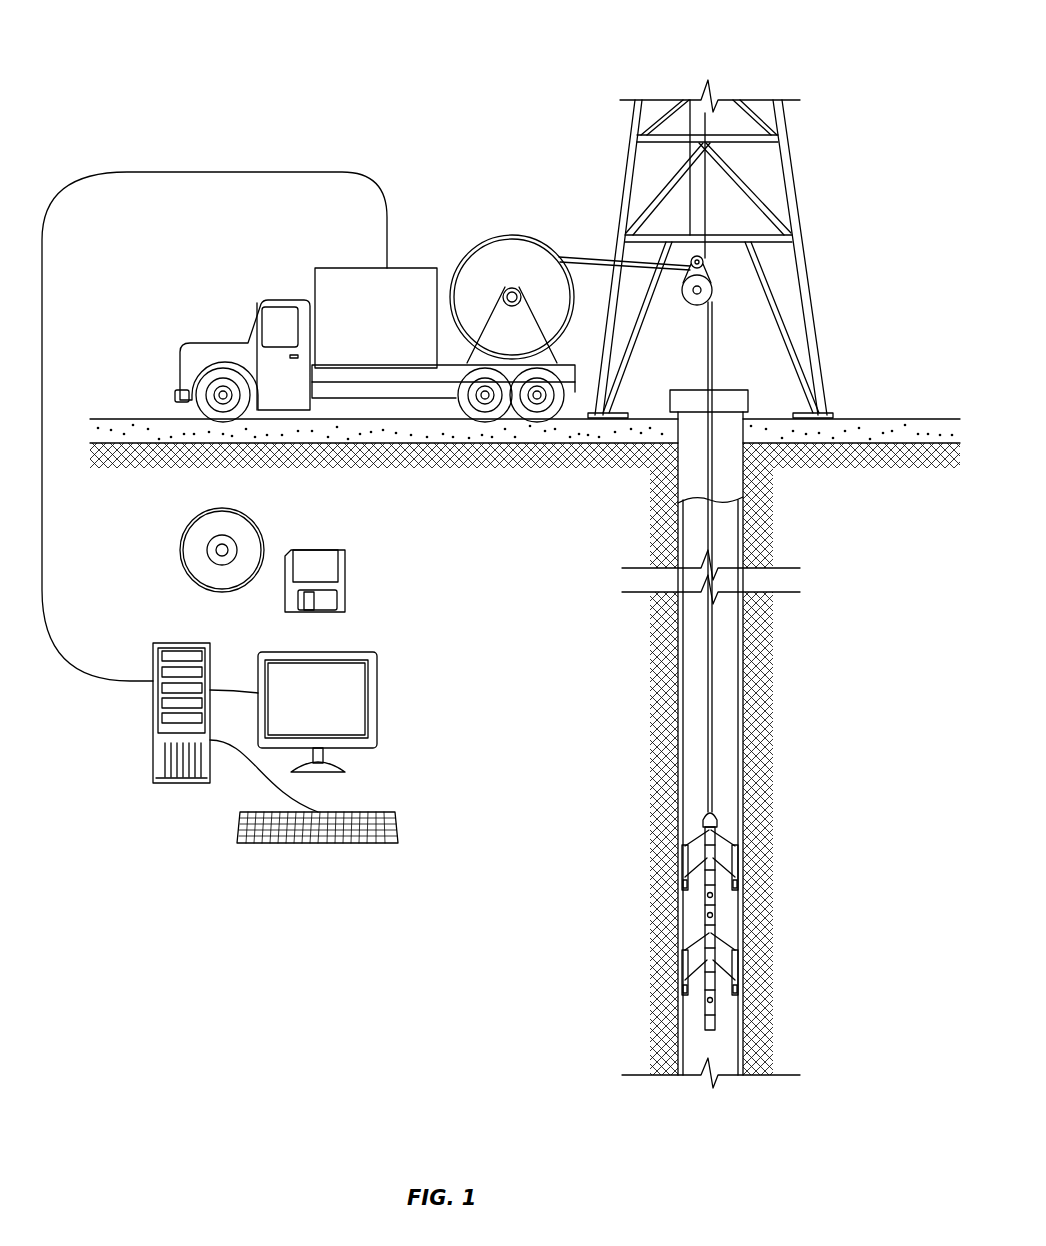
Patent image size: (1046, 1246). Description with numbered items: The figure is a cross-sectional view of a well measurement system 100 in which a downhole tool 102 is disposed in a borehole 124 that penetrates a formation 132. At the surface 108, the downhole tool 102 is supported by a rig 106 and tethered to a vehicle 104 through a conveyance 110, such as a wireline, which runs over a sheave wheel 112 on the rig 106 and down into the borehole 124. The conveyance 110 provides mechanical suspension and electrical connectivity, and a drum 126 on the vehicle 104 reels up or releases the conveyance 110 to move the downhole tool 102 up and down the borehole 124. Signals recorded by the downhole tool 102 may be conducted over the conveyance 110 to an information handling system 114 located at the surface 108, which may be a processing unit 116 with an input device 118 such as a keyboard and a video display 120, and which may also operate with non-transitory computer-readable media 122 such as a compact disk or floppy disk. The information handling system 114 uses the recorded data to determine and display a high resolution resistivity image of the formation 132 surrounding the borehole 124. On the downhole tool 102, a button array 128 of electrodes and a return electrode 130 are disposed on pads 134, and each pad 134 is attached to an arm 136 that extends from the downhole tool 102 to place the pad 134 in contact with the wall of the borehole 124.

The well measurement system 100 is at (220, 52).
The downhole tool 102 is at (713, 917).
The vehicle 104 is at (330, 268).
The rig 106 is at (800, 158).
The surface 108 is at (885, 419).
The conveyance 110 is at (707, 664).
The sheave wheel 112 is at (692, 305).
The information handling system 114 is at (197, 860).
The processing unit 116 is at (183, 641).
The input device 118 is at (397, 826).
The video display 120 is at (378, 692).
The non-transitory computer-readable media 122 is at (265, 534).
The borehole 124 is at (733, 542).
The drum 126 is at (507, 236).
The button array 128 is at (742, 960).
The return electrode 130 is at (742, 985).
The formation 132 is at (908, 664).
The pad 134 is at (745, 835).
The arm 136 is at (733, 940).